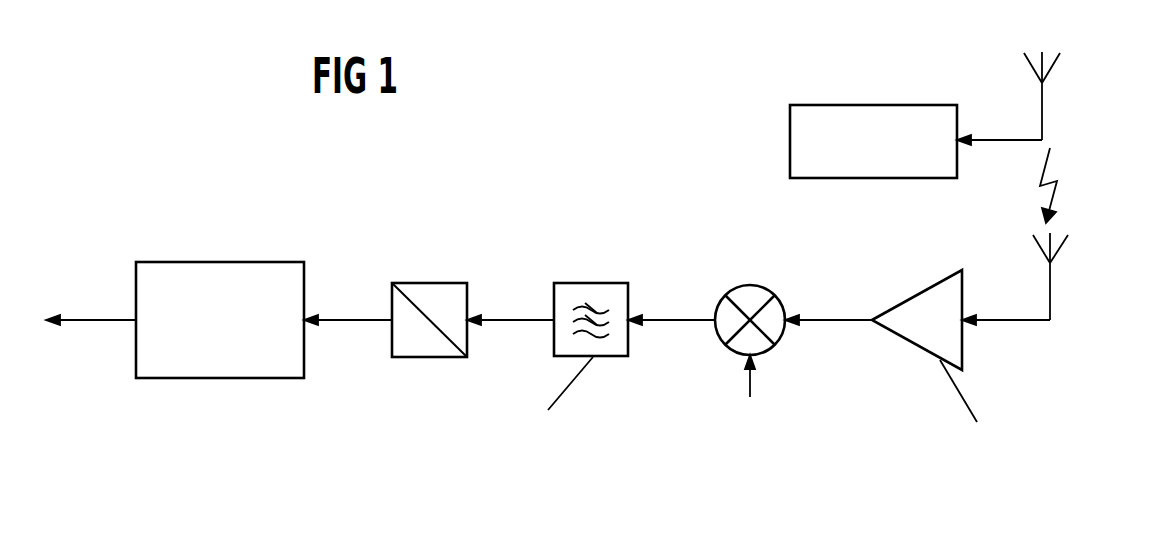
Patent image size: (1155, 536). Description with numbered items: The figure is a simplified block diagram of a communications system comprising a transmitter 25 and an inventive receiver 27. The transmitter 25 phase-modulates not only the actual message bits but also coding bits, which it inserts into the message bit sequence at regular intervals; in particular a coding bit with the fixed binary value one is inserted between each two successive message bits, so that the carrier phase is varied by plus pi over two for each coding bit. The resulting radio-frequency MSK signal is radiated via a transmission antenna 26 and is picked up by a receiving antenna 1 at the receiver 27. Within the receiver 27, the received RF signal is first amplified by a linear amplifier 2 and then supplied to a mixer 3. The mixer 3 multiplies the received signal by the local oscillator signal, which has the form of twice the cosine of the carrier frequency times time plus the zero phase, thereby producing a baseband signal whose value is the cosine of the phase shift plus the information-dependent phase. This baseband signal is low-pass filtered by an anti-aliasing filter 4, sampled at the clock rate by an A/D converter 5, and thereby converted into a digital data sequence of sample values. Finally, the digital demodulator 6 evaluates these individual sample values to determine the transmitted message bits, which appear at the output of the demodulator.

The receiving antenna 1 is at (1064, 248).
The linear amplifier 2 is at (920, 293).
The mixer 3 is at (750, 285).
The anti-aliasing filter 4 is at (592, 283).
The A/D converter 5 is at (428, 283).
The digital demodulator 6 is at (221, 262).
The transmitter 25 is at (790, 140).
The transmission antenna 26 is at (1056, 65).
The receiver 27 is at (611, 180).